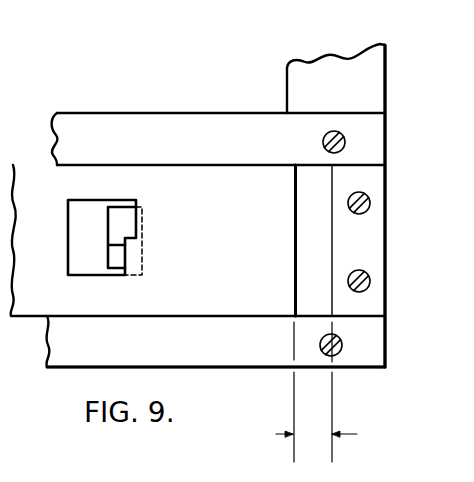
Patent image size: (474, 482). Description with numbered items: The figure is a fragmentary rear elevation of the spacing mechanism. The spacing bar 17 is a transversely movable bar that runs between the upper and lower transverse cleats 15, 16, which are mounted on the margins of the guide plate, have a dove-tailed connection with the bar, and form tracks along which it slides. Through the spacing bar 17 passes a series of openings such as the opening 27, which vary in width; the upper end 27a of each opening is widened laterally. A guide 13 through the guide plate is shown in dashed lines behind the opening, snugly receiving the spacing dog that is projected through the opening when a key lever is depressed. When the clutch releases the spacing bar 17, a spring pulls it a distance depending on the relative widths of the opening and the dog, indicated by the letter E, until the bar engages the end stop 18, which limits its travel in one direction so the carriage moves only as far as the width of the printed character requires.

The guide 13 is at (142, 222).
The upper transverse cleat 15 is at (212, 119).
The lower transverse cleat 16 is at (242, 362).
The spacing bar 17 is at (28, 318).
The end stop 18 is at (0, 159).
The opening 27 is at (62, 260).
The widened upper end of opening 27a is at (136, 200).